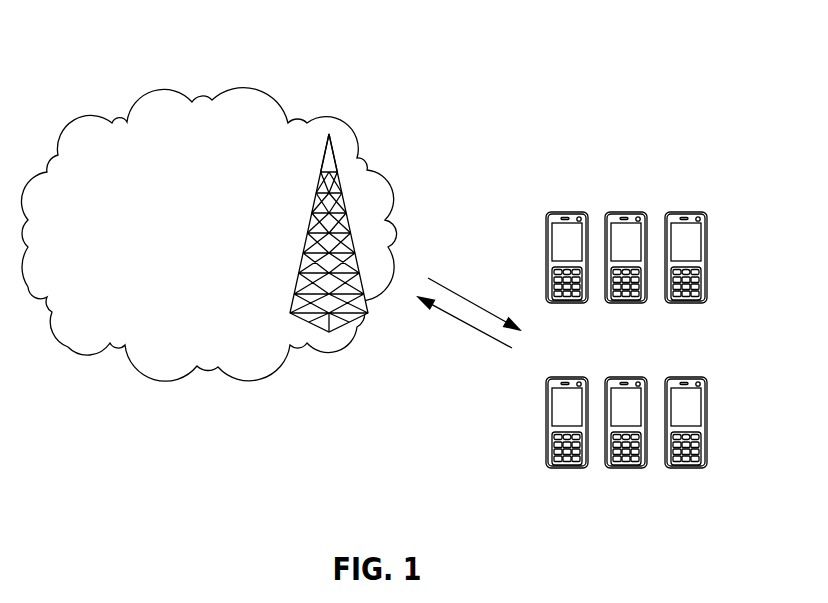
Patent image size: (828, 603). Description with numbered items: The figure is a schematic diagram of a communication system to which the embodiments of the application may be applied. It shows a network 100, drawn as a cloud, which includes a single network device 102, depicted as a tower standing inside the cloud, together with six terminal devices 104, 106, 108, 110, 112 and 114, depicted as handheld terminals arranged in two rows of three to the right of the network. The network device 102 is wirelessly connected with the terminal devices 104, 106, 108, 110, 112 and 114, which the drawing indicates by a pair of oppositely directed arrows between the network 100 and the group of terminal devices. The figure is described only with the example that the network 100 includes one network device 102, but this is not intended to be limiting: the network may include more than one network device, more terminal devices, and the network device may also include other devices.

The network 100 is at (200, 77).
The network device 102 is at (292, 306).
The terminal device 104 is at (565, 212).
The terminal device 106 is at (624, 212).
The terminal device 108 is at (685, 212).
The terminal device 110 is at (565, 468).
The terminal device 112 is at (623, 468).
The terminal device 114 is at (685, 468).